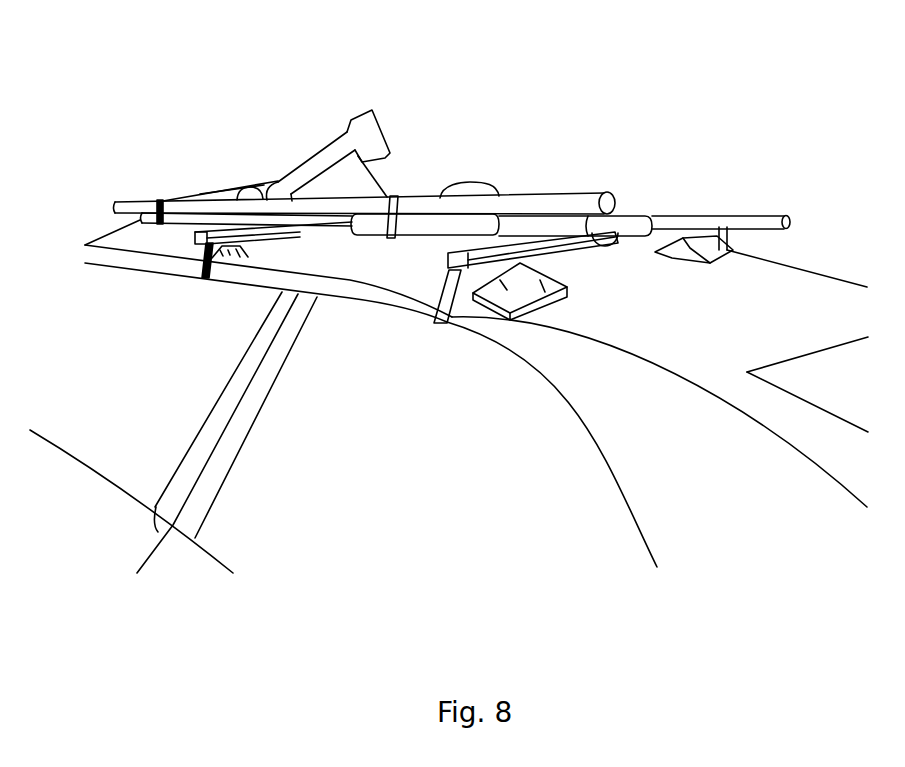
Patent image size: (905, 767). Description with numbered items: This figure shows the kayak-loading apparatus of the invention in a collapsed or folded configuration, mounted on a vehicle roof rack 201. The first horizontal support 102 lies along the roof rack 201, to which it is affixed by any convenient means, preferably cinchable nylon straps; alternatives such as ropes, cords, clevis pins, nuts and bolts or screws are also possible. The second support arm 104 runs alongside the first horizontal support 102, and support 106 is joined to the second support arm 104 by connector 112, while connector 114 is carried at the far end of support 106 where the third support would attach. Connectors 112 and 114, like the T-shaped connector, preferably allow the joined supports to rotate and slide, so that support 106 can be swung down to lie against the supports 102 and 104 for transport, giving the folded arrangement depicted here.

The first horizontal support 102 is at (709, 213).
The second support arm 104 is at (549, 193).
The support 106 is at (321, 151).
The connector 112 is at (263, 190).
The connector 114 is at (388, 139).
The roof rack 201 is at (266, 233).